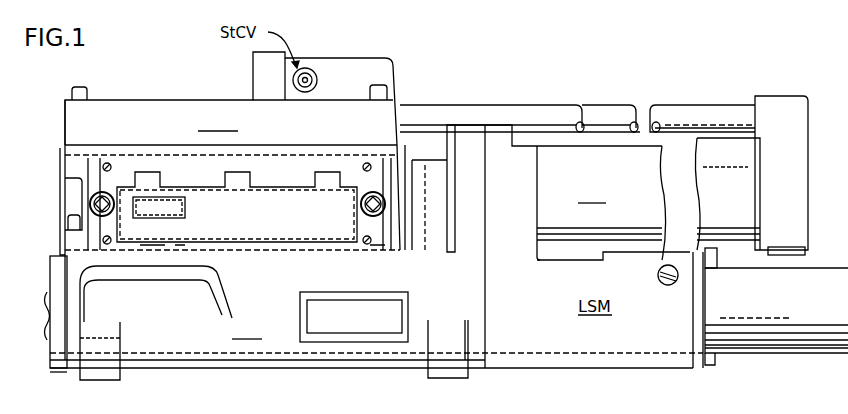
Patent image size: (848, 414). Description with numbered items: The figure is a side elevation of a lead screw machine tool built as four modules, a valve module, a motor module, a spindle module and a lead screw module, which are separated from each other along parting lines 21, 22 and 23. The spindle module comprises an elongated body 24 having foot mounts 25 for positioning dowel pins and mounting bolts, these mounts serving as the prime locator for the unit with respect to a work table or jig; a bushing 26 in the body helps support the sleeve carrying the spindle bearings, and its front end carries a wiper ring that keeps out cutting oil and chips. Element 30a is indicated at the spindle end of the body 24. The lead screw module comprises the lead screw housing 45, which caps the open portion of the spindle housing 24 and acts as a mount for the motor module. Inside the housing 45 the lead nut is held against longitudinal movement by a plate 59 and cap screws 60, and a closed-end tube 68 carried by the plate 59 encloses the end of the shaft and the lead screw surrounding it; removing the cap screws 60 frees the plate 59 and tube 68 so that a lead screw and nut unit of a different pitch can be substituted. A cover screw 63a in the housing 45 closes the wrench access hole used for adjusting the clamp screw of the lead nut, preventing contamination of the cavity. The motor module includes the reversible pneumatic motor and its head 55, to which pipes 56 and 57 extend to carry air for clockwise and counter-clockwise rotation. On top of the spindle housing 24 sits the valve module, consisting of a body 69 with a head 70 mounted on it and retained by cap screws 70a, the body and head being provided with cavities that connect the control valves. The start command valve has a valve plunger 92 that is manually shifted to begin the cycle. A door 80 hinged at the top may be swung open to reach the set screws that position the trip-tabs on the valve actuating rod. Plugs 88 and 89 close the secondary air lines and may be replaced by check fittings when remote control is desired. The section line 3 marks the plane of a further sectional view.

The section line 3 is at (645, 403).
The parting line 21 is at (487, 301).
The parting line 22 is at (537, 205).
The parting line 23 is at (262, 250).
The elongated body 24 is at (447, 152).
The foot mounts 25 is at (110, 371).
The bushing 26 is at (63, 374).
The side bracket 30a is at (45, 358).
The lead screw housing 45 is at (512, 179).
The head 55 is at (792, 169).
The pipe 56 is at (612, 108).
The pipe 57 is at (541, 110).
The plate 59 is at (691, 328).
The cap screws 60 is at (712, 272).
The cover screw 63a is at (668, 265).
The closed-end tube 68 is at (756, 352).
The body 69 is at (62, 160).
The head 70 is at (140, 131).
The cap screws 70a is at (86, 93).
The door 80 is at (250, 221).
The plug 88 is at (89, 204).
The plug 89 is at (386, 204).
The valve plunger 92 is at (311, 72).